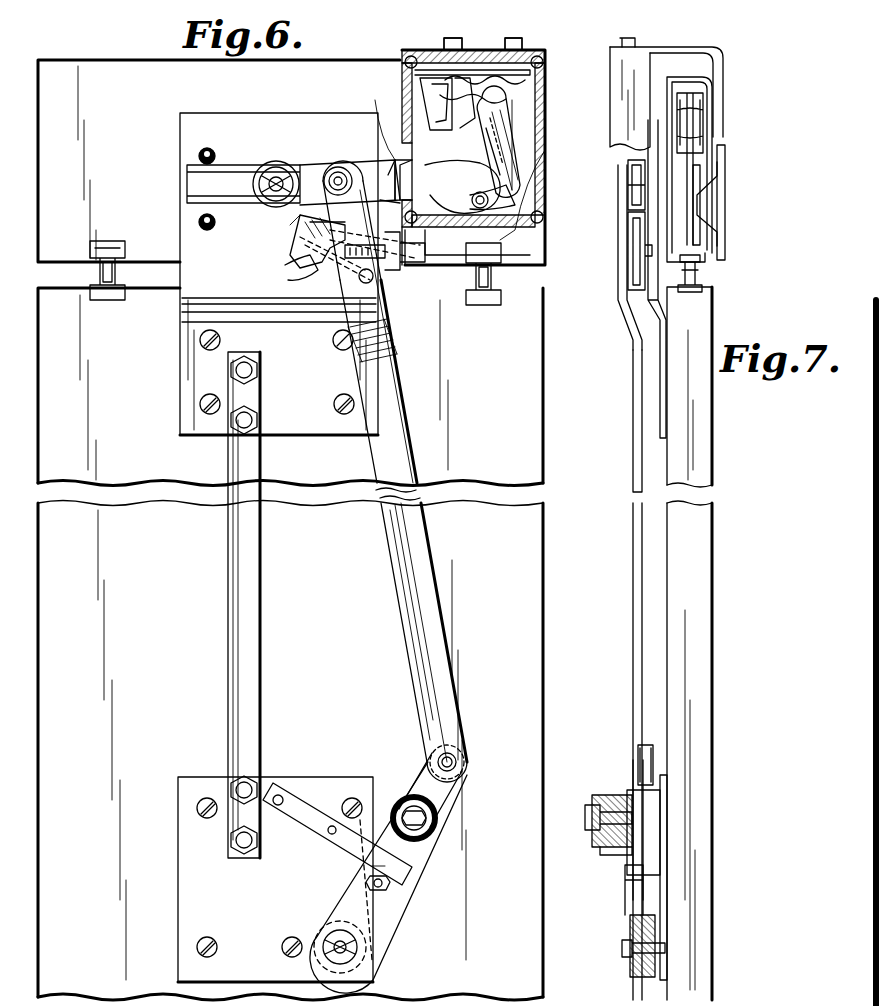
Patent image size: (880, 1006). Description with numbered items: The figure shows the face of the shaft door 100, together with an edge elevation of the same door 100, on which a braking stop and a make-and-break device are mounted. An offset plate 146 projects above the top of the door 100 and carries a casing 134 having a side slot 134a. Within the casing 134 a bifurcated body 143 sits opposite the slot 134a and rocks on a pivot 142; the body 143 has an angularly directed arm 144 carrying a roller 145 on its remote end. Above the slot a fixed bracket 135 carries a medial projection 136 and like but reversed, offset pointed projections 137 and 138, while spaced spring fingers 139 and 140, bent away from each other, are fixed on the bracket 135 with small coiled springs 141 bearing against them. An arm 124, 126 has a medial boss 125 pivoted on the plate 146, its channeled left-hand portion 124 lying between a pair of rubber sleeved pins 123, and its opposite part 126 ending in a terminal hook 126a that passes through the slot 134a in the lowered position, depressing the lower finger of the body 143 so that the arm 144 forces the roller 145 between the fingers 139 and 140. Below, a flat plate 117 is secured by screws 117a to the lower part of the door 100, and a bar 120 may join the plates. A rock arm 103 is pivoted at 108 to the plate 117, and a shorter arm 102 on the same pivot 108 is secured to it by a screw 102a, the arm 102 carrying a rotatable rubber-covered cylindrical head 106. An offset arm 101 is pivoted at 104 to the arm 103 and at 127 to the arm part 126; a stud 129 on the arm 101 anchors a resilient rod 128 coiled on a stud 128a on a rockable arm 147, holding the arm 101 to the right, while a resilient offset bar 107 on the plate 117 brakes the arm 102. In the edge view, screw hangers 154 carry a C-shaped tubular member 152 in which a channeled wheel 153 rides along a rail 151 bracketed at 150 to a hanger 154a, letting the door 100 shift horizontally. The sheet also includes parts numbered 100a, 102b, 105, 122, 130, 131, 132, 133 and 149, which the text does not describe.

In FIG. 6, the shaft door 100 is at (290, 644).
In FIG. 7, the shaft door 100 is at (714, 312).
In FIG. 6, the upper door panel section 100a is at (219, 161).
In FIG. 6, the offset arm 101 is at (433, 638).
In FIG. 7, the offset arm 101 is at (636, 410).
In FIG. 6, the shorter arm 102 is at (383, 920).
In FIG. 7, the shorter arm 102 is at (636, 883).
In FIG. 6, the screw 102a is at (390, 890).
In FIG. 6, the lever stop nut 102b is at (367, 880).
In FIG. 6, the rock arm 103 is at (456, 797).
In FIG. 7, the rock arm 103 is at (644, 784).
In FIG. 6, the pivot 104 is at (456, 762).
In FIG. 7, the pivot 104 is at (636, 766).
In FIG. 6, the bolt 105 is at (420, 828).
In FIG. 7, the bolt 105 is at (592, 820).
In FIG. 6, the cylindrical head 106 is at (440, 818).
In FIG. 7, the cylindrical head 106 is at (604, 850).
In FIG. 6, the resilient offset bar 107 is at (290, 800).
In FIG. 6, the pivot 108 is at (350, 962).
In FIG. 7, the pivot 108 is at (630, 950).
In FIG. 6, the flat plate 117 is at (200, 862).
In FIG. 7, the flat plate 117 is at (666, 806).
In FIG. 6, the screws 117a is at (200, 948).
In FIG. 6, the bar 120 is at (236, 650).
In FIG. 6, the plate screw 122 is at (208, 404).
In FIG. 6, the rubber sleeved pins 123 is at (200, 223).
In FIG. 6, the arm 124 is at (187, 178).
In FIG. 6, the medial boss 125 is at (268, 170).
In FIG. 7, the medial boss 125 is at (630, 164).
In FIG. 6, the arm part 126 is at (360, 172).
In FIG. 6, the terminal hook 126a is at (404, 180).
In FIG. 6, the pivot 127 is at (332, 176).
In FIG. 7, the pivot 127 is at (614, 190).
In FIG. 6, the resilient rod 128 is at (301, 238).
In FIG. 6, the stud 128a is at (332, 230).
In FIG. 6, the stud 129 is at (362, 282).
In FIG. 6, the arm upper section 130 is at (390, 270).
In FIG. 6, the spring 131 is at (387, 262).
In FIG. 6, the bracket 132 is at (402, 262).
In FIG. 6, the lock housing 133 is at (407, 68).
In FIG. 6, the casing 134 is at (530, 232).
In FIG. 7, the casing 134 is at (615, 76).
In FIG. 6, the side slot 134a is at (408, 180).
In FIG. 6, the fixed bracket 135 is at (426, 60).
In FIG. 6, the medial projection 136 is at (508, 112).
In FIG. 6, the pointed projection 137 is at (468, 74).
In FIG. 6, the pointed projection 138 is at (434, 125).
In FIG. 6, the spring finger 139 is at (525, 78).
In FIG. 6, the spring finger 140 is at (505, 130).
In FIG. 6, the coiled springs 141 is at (508, 145).
In FIG. 6, the pivot 142 is at (490, 198).
In FIG. 6, the bifurcated body 143 is at (500, 170).
In FIG. 6, the angularly directed arm 144 is at (515, 160).
In FIG. 6, the roller 145 is at (512, 98).
In FIG. 6, the offset plate 146 is at (279, 274).
In FIG. 7, the offset plate 146 is at (658, 352).
In FIG. 6, the arm 147 is at (292, 267).
In FIG. 7, the track flange 149 is at (726, 163).
In FIG. 7, the bracket 150 is at (703, 200).
In FIG. 7, the rail 151 is at (693, 220).
In FIG. 7, the C-shaped tubular member 152 is at (724, 78).
In FIG. 7, the channeled wheel 153 is at (692, 118).
In FIG. 6, the screw hangers 154 is at (107, 252).
In FIG. 7, the screw hangers 154 is at (702, 275).
In FIG. 6, the hanger 154a is at (468, 50).